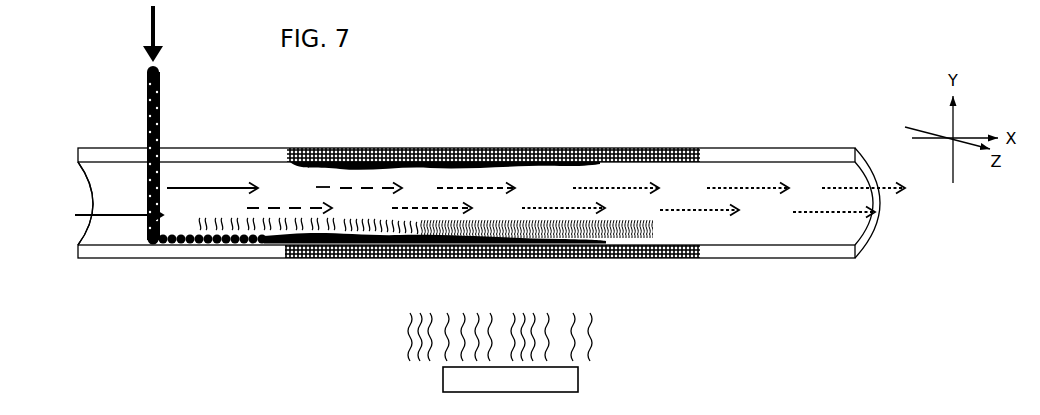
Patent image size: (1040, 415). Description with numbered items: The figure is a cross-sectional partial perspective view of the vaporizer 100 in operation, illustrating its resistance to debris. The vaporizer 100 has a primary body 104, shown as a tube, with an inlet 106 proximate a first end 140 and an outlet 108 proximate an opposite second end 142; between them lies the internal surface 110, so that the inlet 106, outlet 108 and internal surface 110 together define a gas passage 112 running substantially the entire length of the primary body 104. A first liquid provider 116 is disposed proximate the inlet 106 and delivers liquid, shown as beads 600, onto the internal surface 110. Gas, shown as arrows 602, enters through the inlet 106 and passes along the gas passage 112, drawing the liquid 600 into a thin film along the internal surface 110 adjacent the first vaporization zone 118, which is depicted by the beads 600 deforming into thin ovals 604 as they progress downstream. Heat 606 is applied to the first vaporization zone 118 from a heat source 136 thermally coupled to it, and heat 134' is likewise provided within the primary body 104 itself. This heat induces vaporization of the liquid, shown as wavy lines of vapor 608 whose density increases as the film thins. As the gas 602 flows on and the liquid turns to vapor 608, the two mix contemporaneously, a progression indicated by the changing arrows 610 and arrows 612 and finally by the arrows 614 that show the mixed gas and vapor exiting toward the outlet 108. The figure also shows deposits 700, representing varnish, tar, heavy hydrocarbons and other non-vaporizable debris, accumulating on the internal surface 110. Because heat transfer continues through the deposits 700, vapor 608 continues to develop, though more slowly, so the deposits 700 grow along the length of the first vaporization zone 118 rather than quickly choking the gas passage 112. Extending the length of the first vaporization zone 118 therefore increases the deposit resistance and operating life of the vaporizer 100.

The vaporizer 100 is at (474, 196).
The primary body 104 is at (687, 150).
The inlet 106 is at (78, 233).
The outlet 108 is at (858, 233).
The internal surface 110 is at (739, 234).
The gas passage 112 is at (759, 236).
The first liquid provider 116 is at (164, 122).
The first vaporization zone 118 is at (283, 266).
The heat 134' is at (493, 129).
The heat source 136 is at (497, 389).
The first end 140 is at (78, 162).
The second end 142 is at (863, 249).
The liquid 600 is at (148, 72).
The gas 602 is at (120, 188).
The thin ovals 604 is at (328, 234).
The heat 606 is at (607, 313).
The vapor 608 is at (241, 223).
The arrows 610 is at (322, 186).
The arrows 612 is at (488, 186).
The arrows 614 is at (628, 186).
The deposits 700 is at (388, 162).